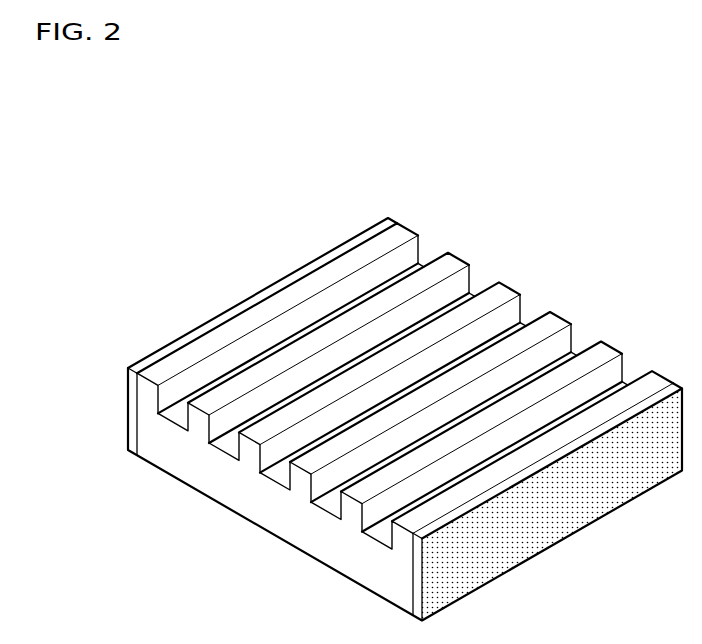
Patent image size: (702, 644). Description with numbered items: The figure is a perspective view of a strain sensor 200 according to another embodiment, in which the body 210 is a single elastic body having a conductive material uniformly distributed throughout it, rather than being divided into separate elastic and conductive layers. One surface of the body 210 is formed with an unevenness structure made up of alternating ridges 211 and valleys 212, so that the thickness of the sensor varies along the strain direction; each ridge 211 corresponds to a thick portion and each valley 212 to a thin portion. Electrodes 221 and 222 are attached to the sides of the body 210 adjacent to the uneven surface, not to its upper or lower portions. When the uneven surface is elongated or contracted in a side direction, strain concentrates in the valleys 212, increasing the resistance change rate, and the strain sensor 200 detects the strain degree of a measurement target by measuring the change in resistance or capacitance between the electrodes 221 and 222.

The strain sensor 200 is at (303, 140).
The body 210 is at (252, 509).
The ridge 211 is at (275, 300).
The valley 212 is at (419, 250).
The electrode 221 is at (127, 404).
The electrode 222 is at (568, 536).